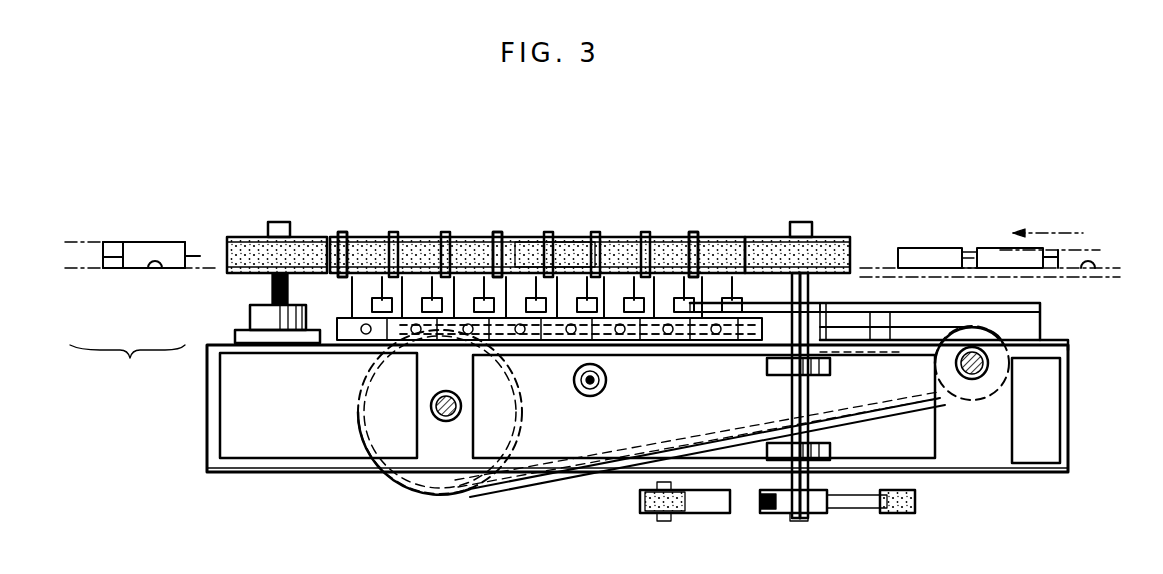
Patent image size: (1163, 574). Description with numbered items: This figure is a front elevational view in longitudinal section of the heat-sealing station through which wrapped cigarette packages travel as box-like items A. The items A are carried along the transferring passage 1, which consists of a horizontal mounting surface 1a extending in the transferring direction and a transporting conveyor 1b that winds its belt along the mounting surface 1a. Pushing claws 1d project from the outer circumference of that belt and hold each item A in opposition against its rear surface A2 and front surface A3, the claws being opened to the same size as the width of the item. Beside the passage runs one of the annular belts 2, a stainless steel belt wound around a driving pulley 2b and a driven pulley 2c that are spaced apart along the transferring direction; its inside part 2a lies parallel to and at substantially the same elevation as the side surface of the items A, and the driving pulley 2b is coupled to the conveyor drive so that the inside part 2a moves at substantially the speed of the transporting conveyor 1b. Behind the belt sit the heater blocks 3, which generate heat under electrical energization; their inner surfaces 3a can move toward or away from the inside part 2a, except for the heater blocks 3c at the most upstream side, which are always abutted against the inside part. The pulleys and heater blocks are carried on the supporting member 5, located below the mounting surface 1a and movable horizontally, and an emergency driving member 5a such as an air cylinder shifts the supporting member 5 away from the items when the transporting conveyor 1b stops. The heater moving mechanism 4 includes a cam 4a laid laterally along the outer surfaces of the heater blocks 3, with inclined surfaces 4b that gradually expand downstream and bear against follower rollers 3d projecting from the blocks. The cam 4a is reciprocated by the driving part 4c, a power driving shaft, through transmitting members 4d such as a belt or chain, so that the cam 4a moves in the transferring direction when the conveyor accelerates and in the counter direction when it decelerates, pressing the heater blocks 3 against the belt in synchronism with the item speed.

The transferring passage 1 is at (130, 358).
The horizontal mounting surface 1a is at (152, 276).
The transporting conveyor 1b is at (127, 270).
The pushing claws 1d is at (118, 257).
The annular belts 2 is at (667, 236).
The inside parts 2a is at (560, 250).
The driving pulleys 2b is at (767, 237).
The driven pulleys 2c is at (296, 237).
The heater blocks 3 is at (470, 237).
The inner surfaces 3a is at (362, 255).
The heater blocks at most upstream side 3c is at (712, 252).
The follower rollers 3d is at (435, 305).
The heater moving mechanisms 4 is at (999, 306).
The cams 4a is at (885, 312).
The inclined surfaces 4b is at (652, 330).
The driving part 4c is at (460, 405).
The transmitting members 4d is at (968, 400).
The supporting members 5 is at (1068, 470).
The emergency driving members 5a is at (583, 393).
The box-like items A is at (165, 238).
The rear surface A2 is at (1083, 233).
The front surface A3 is at (963, 250).